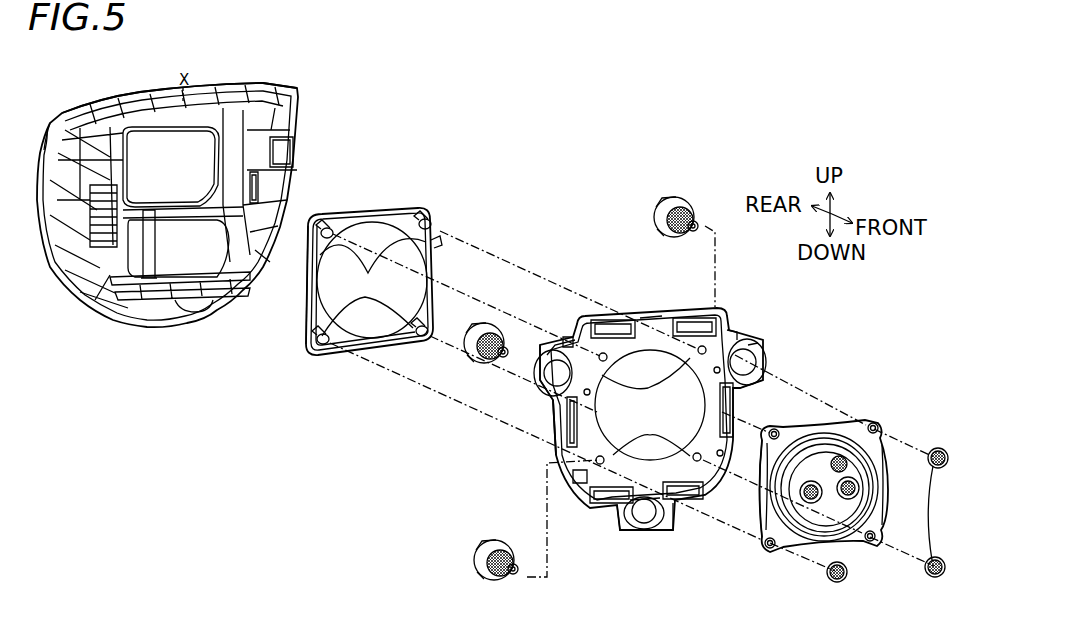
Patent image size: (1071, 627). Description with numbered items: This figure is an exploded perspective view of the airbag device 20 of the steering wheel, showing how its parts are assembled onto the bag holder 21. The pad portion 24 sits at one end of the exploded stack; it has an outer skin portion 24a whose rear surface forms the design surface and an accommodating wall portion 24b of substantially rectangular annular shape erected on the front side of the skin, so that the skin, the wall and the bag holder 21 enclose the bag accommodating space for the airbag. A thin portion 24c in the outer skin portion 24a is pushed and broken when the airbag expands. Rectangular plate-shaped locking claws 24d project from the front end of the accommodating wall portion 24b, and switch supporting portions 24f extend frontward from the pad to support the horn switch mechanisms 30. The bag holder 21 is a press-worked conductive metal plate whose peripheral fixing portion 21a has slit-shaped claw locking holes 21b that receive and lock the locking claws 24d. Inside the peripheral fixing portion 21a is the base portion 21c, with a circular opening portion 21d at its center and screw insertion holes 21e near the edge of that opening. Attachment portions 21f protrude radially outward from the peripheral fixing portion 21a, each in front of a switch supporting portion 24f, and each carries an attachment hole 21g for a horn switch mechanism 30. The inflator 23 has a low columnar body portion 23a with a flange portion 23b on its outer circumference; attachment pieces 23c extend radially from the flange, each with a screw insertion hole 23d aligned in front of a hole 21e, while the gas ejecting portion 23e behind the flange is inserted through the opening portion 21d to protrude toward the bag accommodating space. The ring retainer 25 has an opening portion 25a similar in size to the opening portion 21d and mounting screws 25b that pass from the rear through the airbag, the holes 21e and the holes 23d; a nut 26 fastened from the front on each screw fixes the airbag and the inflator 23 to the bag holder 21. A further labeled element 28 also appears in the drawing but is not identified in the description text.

The airbag device 20 is at (580, 137).
The bag holder 21 is at (725, 311).
The peripheral fixing portion 21a is at (657, 318).
The claw locking hole 21b is at (623, 320).
The base portion 21c is at (648, 387).
The opening portion 21d is at (556, 447).
The screw insertion hole 21e is at (646, 407).
The attachment portion 21f is at (757, 341).
The attachment hole 21g is at (762, 354).
The inflator 23 is at (824, 469).
The body portion 23a is at (833, 424).
The flange portion 23b is at (849, 544).
The attachment piece 23c is at (774, 432).
The screw insertion hole 23d is at (782, 429).
The gas ejecting portion 23e is at (765, 543).
The pad portion 24 is at (247, 92).
The outer skin portion 24a is at (127, 100).
The accommodating wall portion 24b is at (290, 138).
The thin portion 24c is at (170, 216).
The locking claw 24d is at (297, 200).
The switch supporting portion 24f is at (50, 130).
The ring retainer 25 is at (395, 204).
The opening portion 25a is at (306, 307).
The mounting screw 25b is at (372, 280).
The nut 26 is at (836, 473).
The screw pair 28 is at (927, 510).
The horn switch mechanism 30 is at (462, 323).